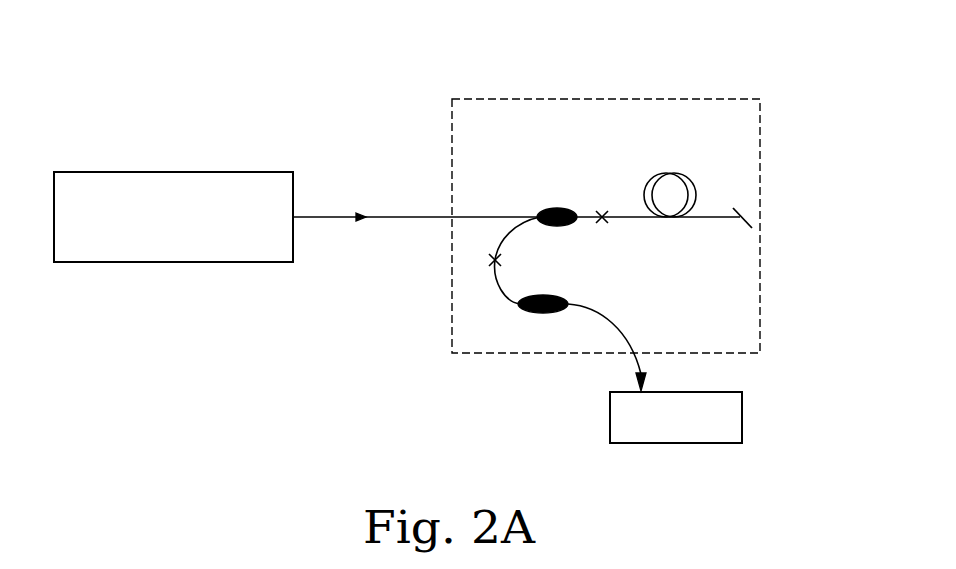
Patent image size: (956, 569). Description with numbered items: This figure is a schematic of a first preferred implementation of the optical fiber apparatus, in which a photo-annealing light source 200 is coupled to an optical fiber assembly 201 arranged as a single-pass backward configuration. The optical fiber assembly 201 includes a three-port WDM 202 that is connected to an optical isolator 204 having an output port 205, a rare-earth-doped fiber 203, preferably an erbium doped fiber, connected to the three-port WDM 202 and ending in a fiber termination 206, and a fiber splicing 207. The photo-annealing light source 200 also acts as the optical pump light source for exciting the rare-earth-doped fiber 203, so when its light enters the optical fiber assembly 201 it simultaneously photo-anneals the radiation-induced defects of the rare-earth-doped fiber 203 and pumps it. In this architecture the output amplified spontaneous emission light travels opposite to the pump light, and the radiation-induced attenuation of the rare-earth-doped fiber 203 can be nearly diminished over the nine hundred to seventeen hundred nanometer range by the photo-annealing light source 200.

The photo-annealing light source 200 is at (233, 172).
The optical fiber assembly 201 is at (482, 99).
The 3-port WDM 202 is at (560, 208).
The rare-earth-doped fiber 203 is at (680, 177).
The optical isolator 204 is at (540, 314).
The output port 205 is at (682, 443).
The fiber termination 206 is at (740, 216).
The fiber splicing 207 is at (604, 212).